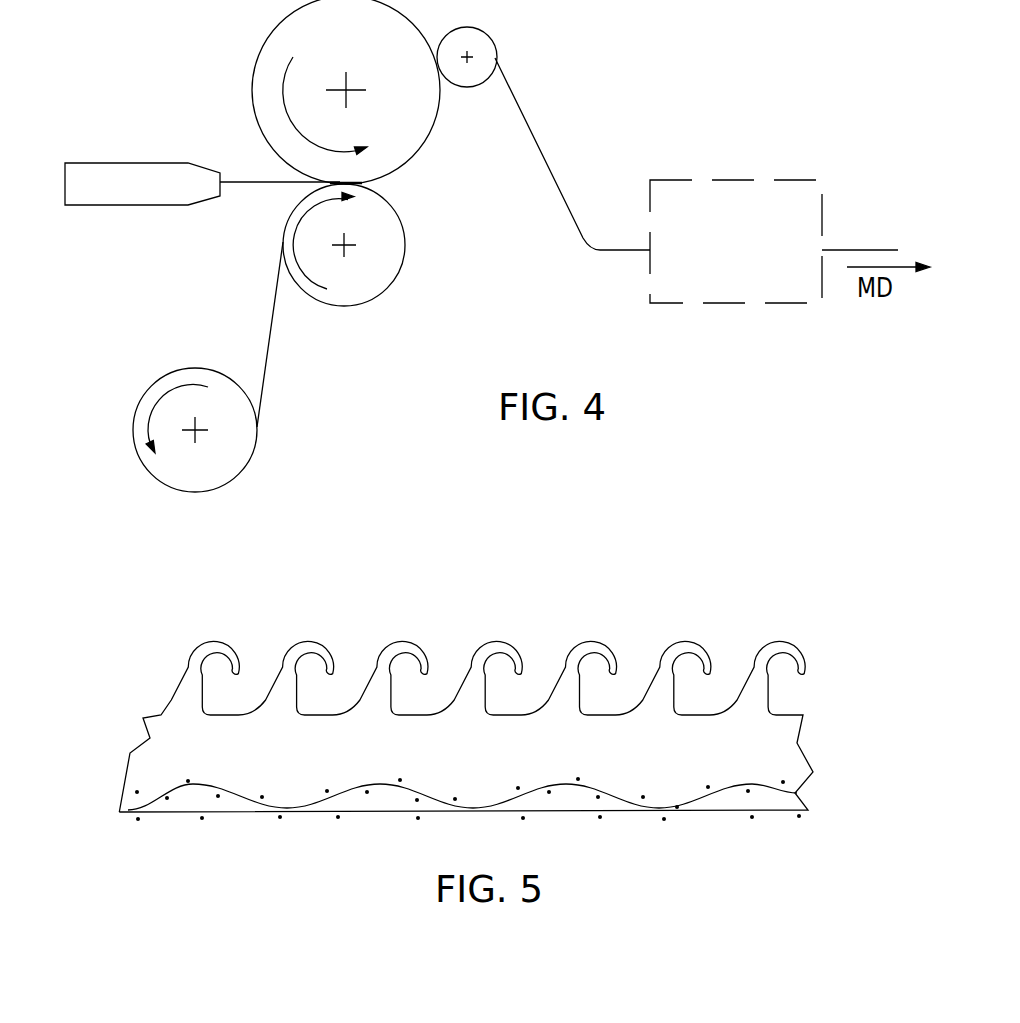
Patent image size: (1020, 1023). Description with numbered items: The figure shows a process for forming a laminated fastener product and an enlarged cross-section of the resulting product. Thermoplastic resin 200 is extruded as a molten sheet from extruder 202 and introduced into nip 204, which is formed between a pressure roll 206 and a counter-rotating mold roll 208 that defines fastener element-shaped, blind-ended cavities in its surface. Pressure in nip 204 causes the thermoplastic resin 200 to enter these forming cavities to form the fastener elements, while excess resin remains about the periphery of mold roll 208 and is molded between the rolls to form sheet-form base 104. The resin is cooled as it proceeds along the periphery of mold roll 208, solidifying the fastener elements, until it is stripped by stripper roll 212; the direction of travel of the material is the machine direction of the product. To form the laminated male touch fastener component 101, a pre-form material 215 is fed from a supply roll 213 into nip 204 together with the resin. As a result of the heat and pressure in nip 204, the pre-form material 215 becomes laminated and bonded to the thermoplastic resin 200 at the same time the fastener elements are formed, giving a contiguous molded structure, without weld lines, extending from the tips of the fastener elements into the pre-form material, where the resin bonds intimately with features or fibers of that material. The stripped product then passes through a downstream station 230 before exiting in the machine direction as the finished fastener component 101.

The extruder 202 is at (132, 162).
The thermoplastic resin 200 is at (262, 184).
The mold roll 208 is at (370, 41).
The stripper roll 212 is at (466, 87).
The nip 204 is at (400, 186).
The pressure roll 206 is at (405, 258).
The pre-form material 215 is at (264, 353).
The take-up roller 213 is at (153, 388).
The processing station 230 is at (716, 178).
The laminated male touch fastener component 101 is at (838, 231).
The sheet-form base 104 is at (839, 252).